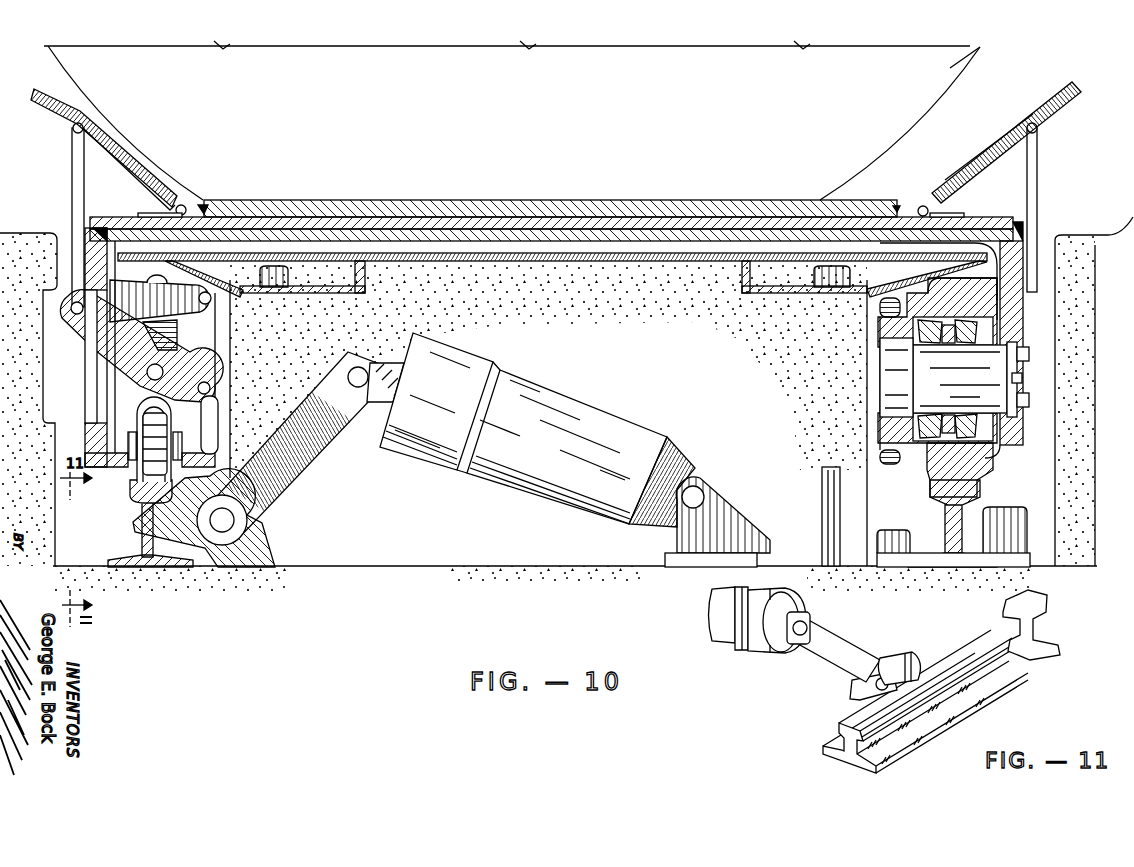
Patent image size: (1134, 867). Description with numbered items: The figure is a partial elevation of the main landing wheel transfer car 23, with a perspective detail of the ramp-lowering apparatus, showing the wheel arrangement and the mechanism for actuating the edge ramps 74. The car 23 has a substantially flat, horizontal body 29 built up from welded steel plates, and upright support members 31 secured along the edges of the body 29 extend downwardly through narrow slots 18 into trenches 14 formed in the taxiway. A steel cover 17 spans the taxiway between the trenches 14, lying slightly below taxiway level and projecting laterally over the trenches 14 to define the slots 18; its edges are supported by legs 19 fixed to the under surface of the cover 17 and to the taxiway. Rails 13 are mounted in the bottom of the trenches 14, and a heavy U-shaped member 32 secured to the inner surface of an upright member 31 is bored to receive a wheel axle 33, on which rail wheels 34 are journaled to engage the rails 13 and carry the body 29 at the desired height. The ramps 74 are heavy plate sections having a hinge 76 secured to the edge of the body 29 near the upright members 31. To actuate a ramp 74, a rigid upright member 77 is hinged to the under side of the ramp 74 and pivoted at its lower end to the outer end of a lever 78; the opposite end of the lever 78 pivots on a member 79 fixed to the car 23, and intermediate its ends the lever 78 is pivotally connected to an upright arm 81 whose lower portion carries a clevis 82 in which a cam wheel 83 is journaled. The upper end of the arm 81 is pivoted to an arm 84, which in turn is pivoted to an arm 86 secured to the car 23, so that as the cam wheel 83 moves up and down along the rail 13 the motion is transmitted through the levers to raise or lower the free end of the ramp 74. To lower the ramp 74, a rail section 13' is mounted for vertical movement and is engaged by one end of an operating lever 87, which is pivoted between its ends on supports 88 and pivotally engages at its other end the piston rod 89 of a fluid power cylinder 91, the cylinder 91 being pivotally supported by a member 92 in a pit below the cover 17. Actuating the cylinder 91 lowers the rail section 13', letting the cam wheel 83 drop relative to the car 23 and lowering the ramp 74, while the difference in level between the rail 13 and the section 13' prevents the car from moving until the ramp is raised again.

In FIG. 10, the rails 13 is at (567, 541).
In FIG. 11, the rails 13 is at (1059, 625).
In FIG. 11, the rail section 13' is at (925, 692).
In FIG. 10, the trenches 14 is at (1037, 382).
In FIG. 10, the cover 17 is at (672, 263).
In FIG. 10, the slot 18 is at (1047, 247).
In FIG. 10, the legs 19 is at (930, 287).
In FIG. 10, the transfer car 23 is at (953, 68).
In FIG. 10, the body 29 is at (495, 232).
In FIG. 10, the upright support members 31 is at (1008, 307).
In FIG. 10, the U-shaped member 32 is at (878, 455).
In FIG. 10, the wheel axle 33 is at (893, 380).
In FIG. 10, the rail wheels 34 is at (980, 290).
In FIG. 10, the edge ramps 74 is at (42, 92).
In FIG. 10, the hinge 76 is at (925, 205).
In FIG. 10, the rigid upright member 77 is at (80, 190).
In FIG. 10, the lever 78 is at (95, 345).
In FIG. 10, the member 79 is at (207, 413).
In FIG. 10, the upright arm 81 is at (172, 340).
In FIG. 10, the clevis 82 is at (137, 425).
In FIG. 10, the cam wheel 83 is at (150, 462).
In FIG. 10, the arm 84 is at (176, 277).
In FIG. 10, the arm 86 is at (190, 296).
In FIG. 10, the operating lever 87 is at (318, 450).
In FIG. 11, the operating lever 87 is at (850, 652).
In FIG. 10, the supports 88 is at (262, 547).
In FIG. 11, the supports 88 is at (850, 700).
In FIG. 10, the piston rod 89 is at (392, 360).
In FIG. 11, the piston rod 89 is at (793, 648).
In FIG. 10, the fluid power cylinder 91 is at (572, 425).
In FIG. 11, the fluid power cylinder 91 is at (790, 602).
In FIG. 10, the member 92 is at (725, 513).